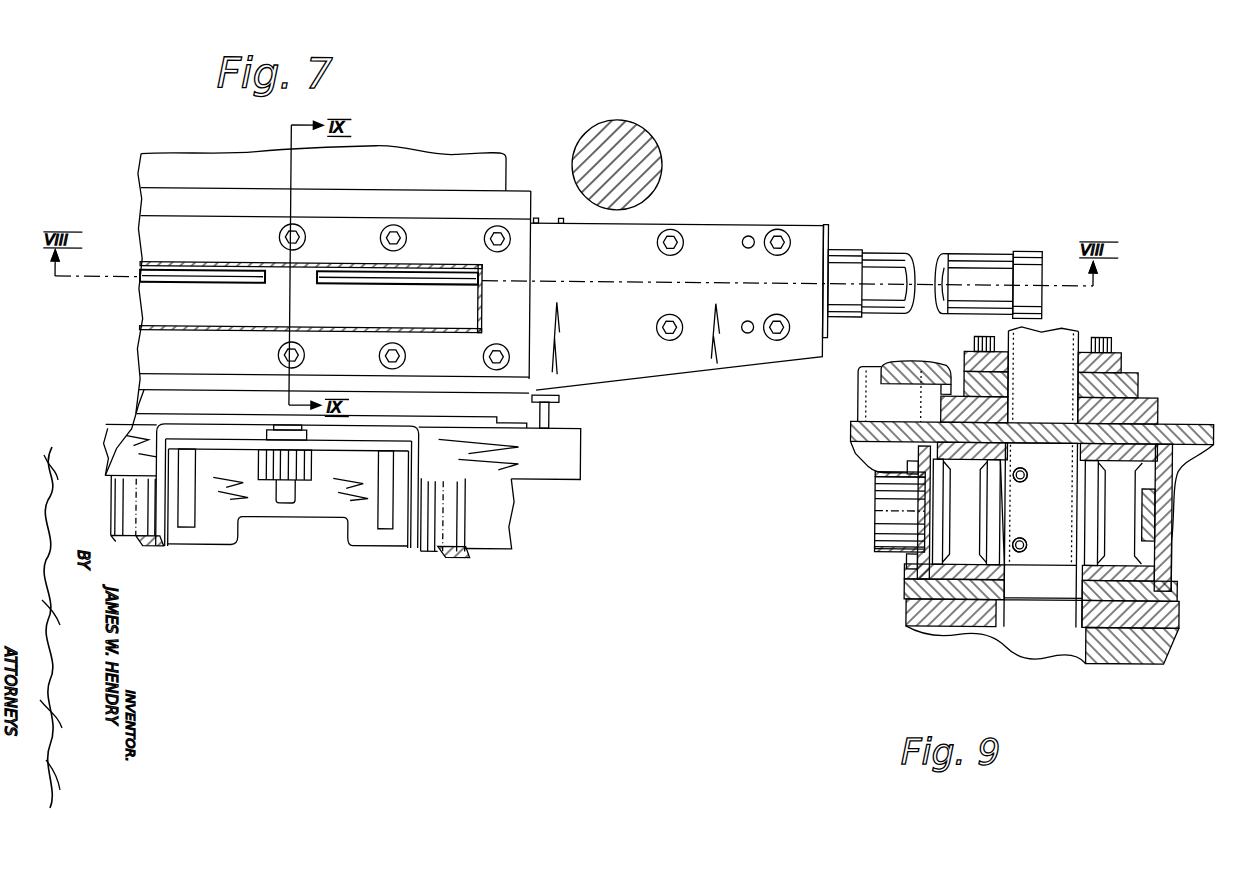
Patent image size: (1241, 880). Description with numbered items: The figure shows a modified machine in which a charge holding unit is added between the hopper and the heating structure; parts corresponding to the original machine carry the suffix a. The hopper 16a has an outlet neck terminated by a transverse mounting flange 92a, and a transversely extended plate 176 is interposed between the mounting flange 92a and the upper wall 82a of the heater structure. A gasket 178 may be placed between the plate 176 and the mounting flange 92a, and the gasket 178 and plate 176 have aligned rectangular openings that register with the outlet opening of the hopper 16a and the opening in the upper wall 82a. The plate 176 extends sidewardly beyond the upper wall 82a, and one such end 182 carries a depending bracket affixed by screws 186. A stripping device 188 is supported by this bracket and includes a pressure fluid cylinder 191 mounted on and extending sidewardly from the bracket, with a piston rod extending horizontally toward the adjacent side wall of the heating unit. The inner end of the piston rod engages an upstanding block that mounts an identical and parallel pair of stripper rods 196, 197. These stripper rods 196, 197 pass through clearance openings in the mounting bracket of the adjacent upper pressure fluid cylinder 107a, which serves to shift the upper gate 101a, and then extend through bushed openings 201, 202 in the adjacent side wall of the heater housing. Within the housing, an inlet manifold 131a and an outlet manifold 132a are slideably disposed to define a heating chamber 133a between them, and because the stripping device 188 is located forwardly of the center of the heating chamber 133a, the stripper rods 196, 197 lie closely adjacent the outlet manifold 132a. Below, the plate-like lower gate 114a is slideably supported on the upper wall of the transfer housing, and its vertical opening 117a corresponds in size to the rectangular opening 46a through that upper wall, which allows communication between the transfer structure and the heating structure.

In FIG. 7, the hopper 16a is at (150, 328).
In FIG. 9, the hopper 16a is at (1078, 334).
In FIG. 7, the mounting flange 92a is at (150, 346).
In FIG. 9, the mounting flange 92a is at (968, 360).
In FIG. 7, the heating chamber 133a is at (155, 307).
In FIG. 9, the heating chamber 133a is at (1018, 572).
In FIG. 7, the stripper rod 196 is at (361, 281).
In FIG. 9, the stripper rod 196 is at (1027, 472).
In FIG. 7, the gasket 178 is at (158, 382).
In FIG. 7, the end of the plate 182 is at (678, 305).
In FIG. 7, the screws 186 is at (673, 232).
In FIG. 7, the stripping device 188 is at (849, 243).
In FIG. 7, the pressure fluid cylinder 191 is at (983, 265).
In FIG. 7, the upper pressure fluid cylinder 107a is at (565, 395).
In FIG. 7, the upper gate 101a is at (570, 440).
In FIG. 9, the plate 176 is at (1130, 384).
In FIG. 9, the upper wall 82a is at (935, 410).
In FIG. 9, the bushed opening 201 is at (1022, 482).
In FIG. 9, the stripper rod 197 is at (1024, 540).
In FIG. 9, the bushed opening 202 is at (1022, 552).
In FIG. 9, the outlet manifold 132a is at (899, 578).
In FIG. 9, the inlet manifold 131a is at (1150, 560).
In FIG. 9, the lower gate 114a is at (1162, 591).
In FIG. 9, the rectangular opening 46a is at (1010, 620).
In FIG. 9, the vertical opening 117a is at (1073, 600).